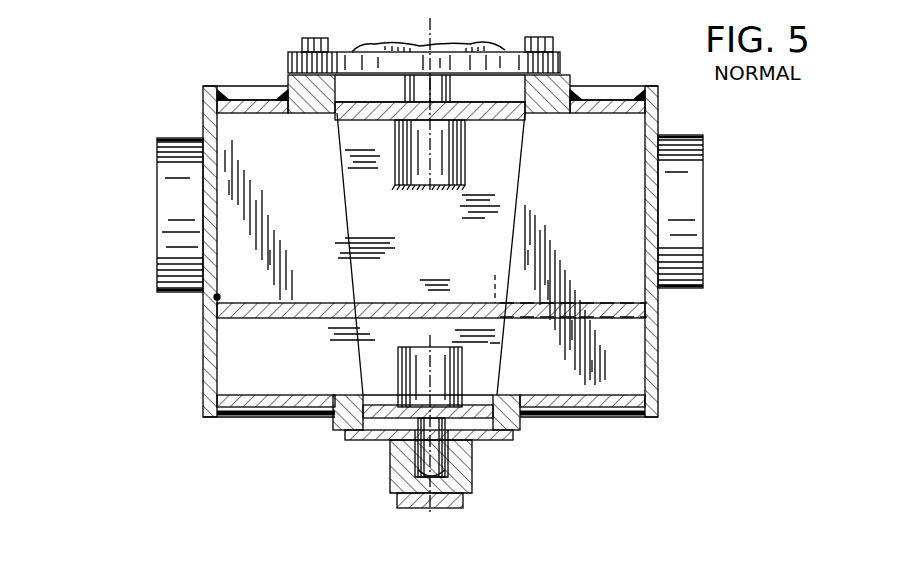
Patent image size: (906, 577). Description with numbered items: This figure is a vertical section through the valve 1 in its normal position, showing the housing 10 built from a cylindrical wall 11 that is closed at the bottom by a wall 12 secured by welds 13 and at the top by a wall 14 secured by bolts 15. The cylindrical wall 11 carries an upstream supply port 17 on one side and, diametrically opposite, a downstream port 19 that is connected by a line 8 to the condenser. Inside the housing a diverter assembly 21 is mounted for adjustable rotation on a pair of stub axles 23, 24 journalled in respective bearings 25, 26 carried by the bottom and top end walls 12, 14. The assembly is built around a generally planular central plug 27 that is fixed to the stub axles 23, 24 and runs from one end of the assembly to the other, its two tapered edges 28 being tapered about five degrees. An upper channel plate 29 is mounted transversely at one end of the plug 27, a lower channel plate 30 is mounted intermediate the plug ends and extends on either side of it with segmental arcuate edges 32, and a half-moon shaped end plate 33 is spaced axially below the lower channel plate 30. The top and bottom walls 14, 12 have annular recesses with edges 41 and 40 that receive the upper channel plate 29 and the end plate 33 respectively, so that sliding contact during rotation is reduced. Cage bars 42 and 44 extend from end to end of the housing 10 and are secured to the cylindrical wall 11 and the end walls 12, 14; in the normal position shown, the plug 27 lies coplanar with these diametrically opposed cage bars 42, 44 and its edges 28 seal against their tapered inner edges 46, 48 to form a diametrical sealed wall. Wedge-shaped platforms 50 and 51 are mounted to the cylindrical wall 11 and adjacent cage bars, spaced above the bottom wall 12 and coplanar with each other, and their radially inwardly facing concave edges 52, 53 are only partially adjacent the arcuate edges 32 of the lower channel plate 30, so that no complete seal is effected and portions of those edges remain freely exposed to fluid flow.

The valve 1 is at (233, 42).
The line 8 is at (143, 212).
The housing 10 is at (185, 370).
The cylindrical wall 11 is at (203, 104).
The wall 12 is at (580, 410).
The welds 13 is at (224, 418).
The wall 14 is at (616, 96).
The bolts 15 is at (322, 36).
The port 17 is at (688, 135).
The downstream port 19 is at (158, 140).
The diverter assembly 21 is at (360, 180).
The stub axle 23 is at (450, 366).
The stub axle 24 is at (455, 176).
The bearing 25 is at (466, 470).
The bearing 26 is at (492, 42).
The central plug 27 is at (366, 233).
The tapered edges 28 is at (347, 222).
The upper channel plate 29 is at (388, 38).
The lower channel plate 30 is at (460, 302).
The edges 32 is at (353, 316).
The end plate 33 is at (382, 395).
The edge 40 is at (492, 395).
The edge 41 is at (346, 78).
The cage bar 42 is at (648, 288).
The cage bar 44 is at (235, 290).
The tapered inner edge 46 is at (520, 166).
The tapered inner edge 48 is at (352, 190).
The platform 50 is at (607, 303).
The platform 51 is at (272, 302).
The concave edge 52 is at (494, 279).
The concave edge 53 is at (355, 310).